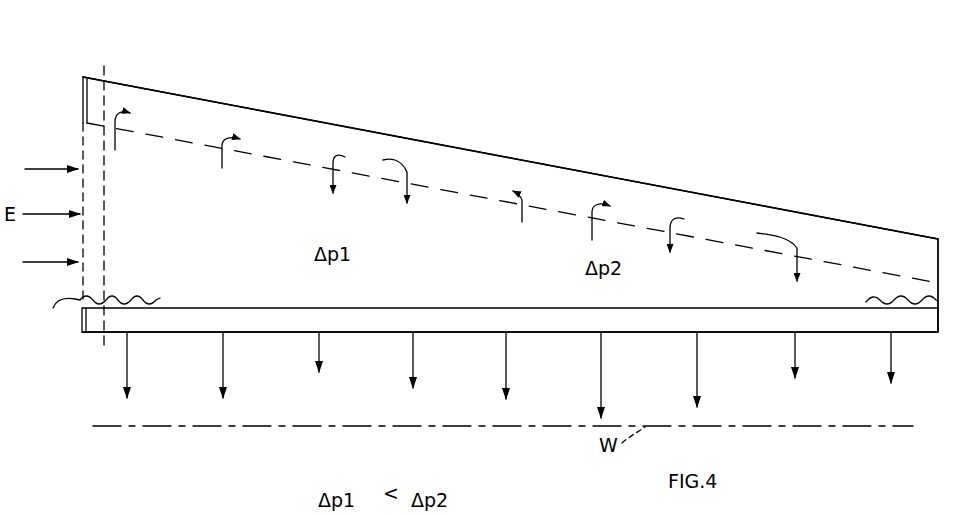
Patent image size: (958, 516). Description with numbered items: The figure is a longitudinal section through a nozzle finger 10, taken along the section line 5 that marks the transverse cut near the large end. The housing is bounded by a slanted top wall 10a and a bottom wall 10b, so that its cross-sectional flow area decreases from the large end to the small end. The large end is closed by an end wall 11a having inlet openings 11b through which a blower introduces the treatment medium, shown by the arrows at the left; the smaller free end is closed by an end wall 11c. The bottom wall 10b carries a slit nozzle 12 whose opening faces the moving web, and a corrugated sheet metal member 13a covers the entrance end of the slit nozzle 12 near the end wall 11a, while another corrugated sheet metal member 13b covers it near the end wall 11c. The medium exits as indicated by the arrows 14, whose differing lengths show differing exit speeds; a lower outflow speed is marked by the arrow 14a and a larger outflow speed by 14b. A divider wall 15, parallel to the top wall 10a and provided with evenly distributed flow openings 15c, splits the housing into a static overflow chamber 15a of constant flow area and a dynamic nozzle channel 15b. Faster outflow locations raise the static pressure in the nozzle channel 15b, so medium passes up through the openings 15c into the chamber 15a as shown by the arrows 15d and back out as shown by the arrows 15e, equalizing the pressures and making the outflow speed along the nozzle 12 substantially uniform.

The section line 5- 5 is at (113, 66).
The nozzle finger 10 is at (627, 92).
The top wall 10a is at (331, 124).
The bottom wall 10b is at (446, 309).
The end wall 11a is at (85, 108).
The inlet openings 11b is at (80, 209).
The end wall 11c is at (938, 266).
The slit nozzle 12 is at (177, 320).
The corrugated sheet metal member 13a is at (95, 316).
The corrugated sheet metal member 13b is at (866, 302).
The arrows 14 is at (225, 368).
The arrow 14a is at (322, 345).
The outflow speed 14b is at (602, 362).
The divider wall 15 is at (642, 230).
The overflow chamber 15a is at (314, 153).
The nozzle channel 15b is at (307, 218).
The flow openings 15c is at (440, 192).
The arrows 15d is at (222, 142).
The arrows 15e is at (718, 230).